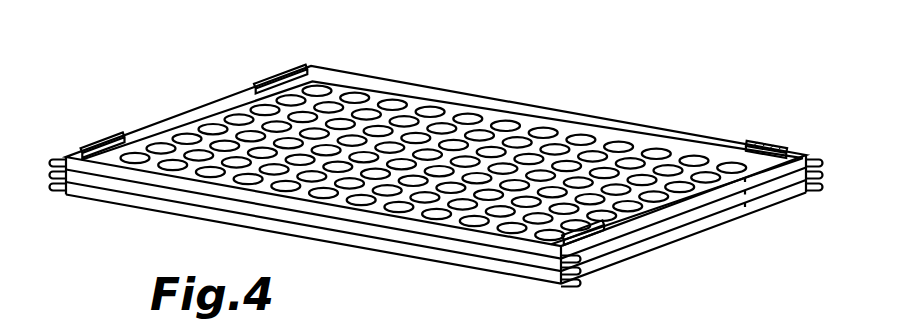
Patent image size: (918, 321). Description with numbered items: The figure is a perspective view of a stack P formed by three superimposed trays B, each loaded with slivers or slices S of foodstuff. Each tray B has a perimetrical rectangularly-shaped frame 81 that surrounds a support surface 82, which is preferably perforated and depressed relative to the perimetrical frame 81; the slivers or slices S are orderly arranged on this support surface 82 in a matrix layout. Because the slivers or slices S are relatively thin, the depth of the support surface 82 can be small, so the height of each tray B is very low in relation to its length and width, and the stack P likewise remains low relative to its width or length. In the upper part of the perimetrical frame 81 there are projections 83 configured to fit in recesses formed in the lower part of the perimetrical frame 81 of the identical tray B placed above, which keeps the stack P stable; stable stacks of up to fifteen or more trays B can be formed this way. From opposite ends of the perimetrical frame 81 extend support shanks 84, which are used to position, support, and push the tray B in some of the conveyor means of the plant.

The perimetrical frame 81 is at (648, 130).
The support surface 82 is at (392, 106).
The projections 83 is at (103, 141).
The support shanks 84 is at (813, 160).
The stack P is at (515, 76).
The tray B is at (551, 105).
The slivers or slices of foodstuff S is at (252, 133).